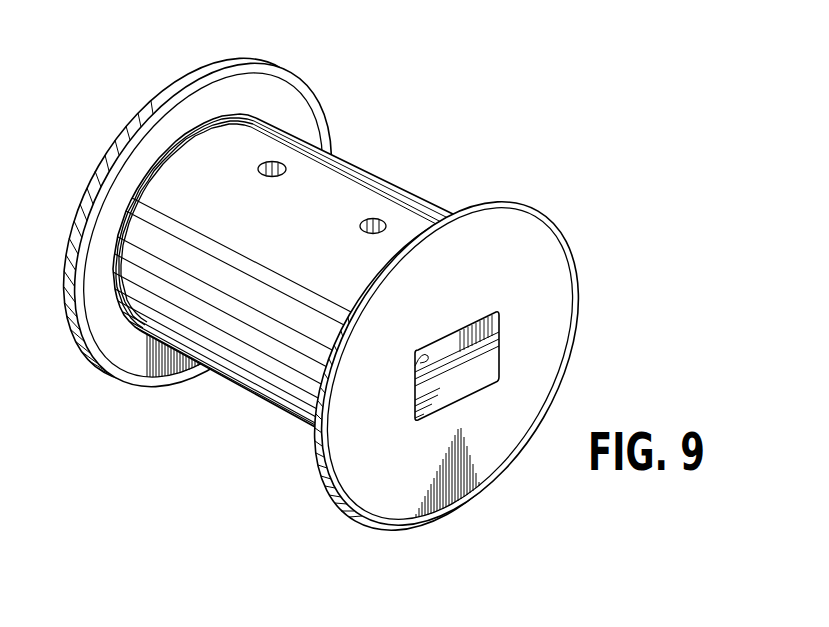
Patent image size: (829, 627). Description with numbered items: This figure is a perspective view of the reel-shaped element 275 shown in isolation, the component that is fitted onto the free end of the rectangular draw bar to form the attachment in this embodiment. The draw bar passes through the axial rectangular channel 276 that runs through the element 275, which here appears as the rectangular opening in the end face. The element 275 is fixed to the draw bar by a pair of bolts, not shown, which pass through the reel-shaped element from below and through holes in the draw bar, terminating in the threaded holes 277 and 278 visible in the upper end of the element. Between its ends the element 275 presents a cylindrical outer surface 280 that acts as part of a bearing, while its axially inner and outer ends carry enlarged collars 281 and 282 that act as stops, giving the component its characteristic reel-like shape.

The reel-shaped element 275 is at (574, 291).
The axial rectangular channel 276 is at (497, 340).
The threaded hole 277 is at (271, 161).
The threaded hole 278 is at (372, 218).
The cylindrical outer surface 280 is at (242, 372).
The enlarged collar 281 is at (236, 60).
The enlarged collar 282 is at (475, 353).